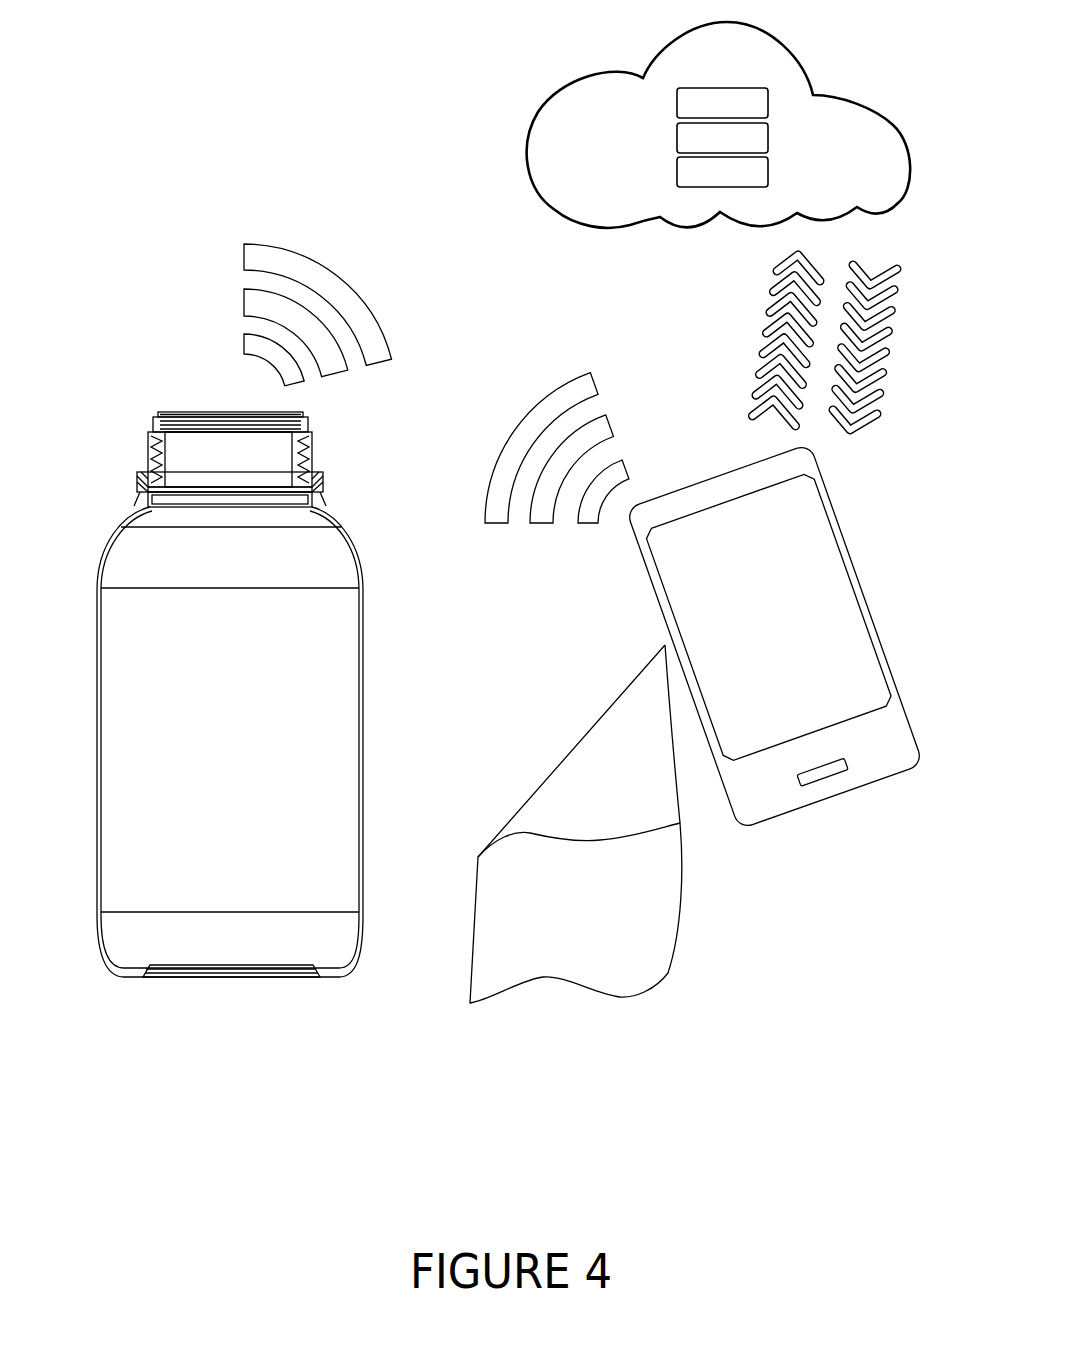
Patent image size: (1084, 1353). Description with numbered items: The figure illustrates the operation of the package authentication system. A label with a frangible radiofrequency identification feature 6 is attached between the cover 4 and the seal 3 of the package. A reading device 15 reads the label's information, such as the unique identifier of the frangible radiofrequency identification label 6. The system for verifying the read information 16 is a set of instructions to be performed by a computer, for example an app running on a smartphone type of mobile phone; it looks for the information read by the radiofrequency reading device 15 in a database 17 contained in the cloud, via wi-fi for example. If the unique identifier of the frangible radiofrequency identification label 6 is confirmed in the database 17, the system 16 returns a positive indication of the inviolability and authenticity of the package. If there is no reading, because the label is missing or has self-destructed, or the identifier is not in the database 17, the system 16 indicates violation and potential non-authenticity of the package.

The seal 3 is at (307, 425).
The cover 4 is at (153, 408).
The frangible radiofrequency identification label 6 is at (238, 412).
The reading device 15 is at (833, 807).
The system for verifying read information 16 is at (681, 888).
The database 17 is at (673, 88).